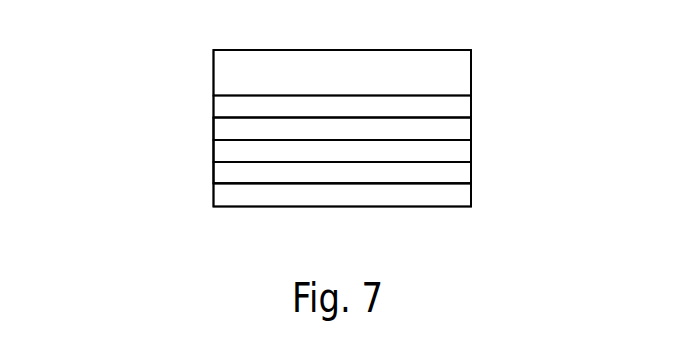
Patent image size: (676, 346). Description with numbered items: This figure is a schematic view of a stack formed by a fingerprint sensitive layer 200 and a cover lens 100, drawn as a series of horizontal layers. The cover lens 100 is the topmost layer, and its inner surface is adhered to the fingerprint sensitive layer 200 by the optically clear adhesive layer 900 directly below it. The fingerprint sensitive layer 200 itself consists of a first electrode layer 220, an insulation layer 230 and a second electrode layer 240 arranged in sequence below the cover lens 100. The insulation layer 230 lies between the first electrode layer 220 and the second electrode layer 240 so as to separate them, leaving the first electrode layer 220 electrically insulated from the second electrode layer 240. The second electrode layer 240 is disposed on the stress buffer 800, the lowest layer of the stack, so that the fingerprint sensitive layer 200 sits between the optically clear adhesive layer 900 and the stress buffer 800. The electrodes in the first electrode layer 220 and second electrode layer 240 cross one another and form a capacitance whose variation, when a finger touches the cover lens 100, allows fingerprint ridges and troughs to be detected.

The cover lens 100 is at (222, 63).
The optically clear adhesive layer 900 is at (222, 105).
The fingerprint sensitive layer 200 is at (127, 118).
The first electrode layer 220 is at (222, 123).
The insulation layer 230 is at (222, 150).
The second electrode layer 240 is at (222, 173).
The stress buffer 800 is at (222, 198).